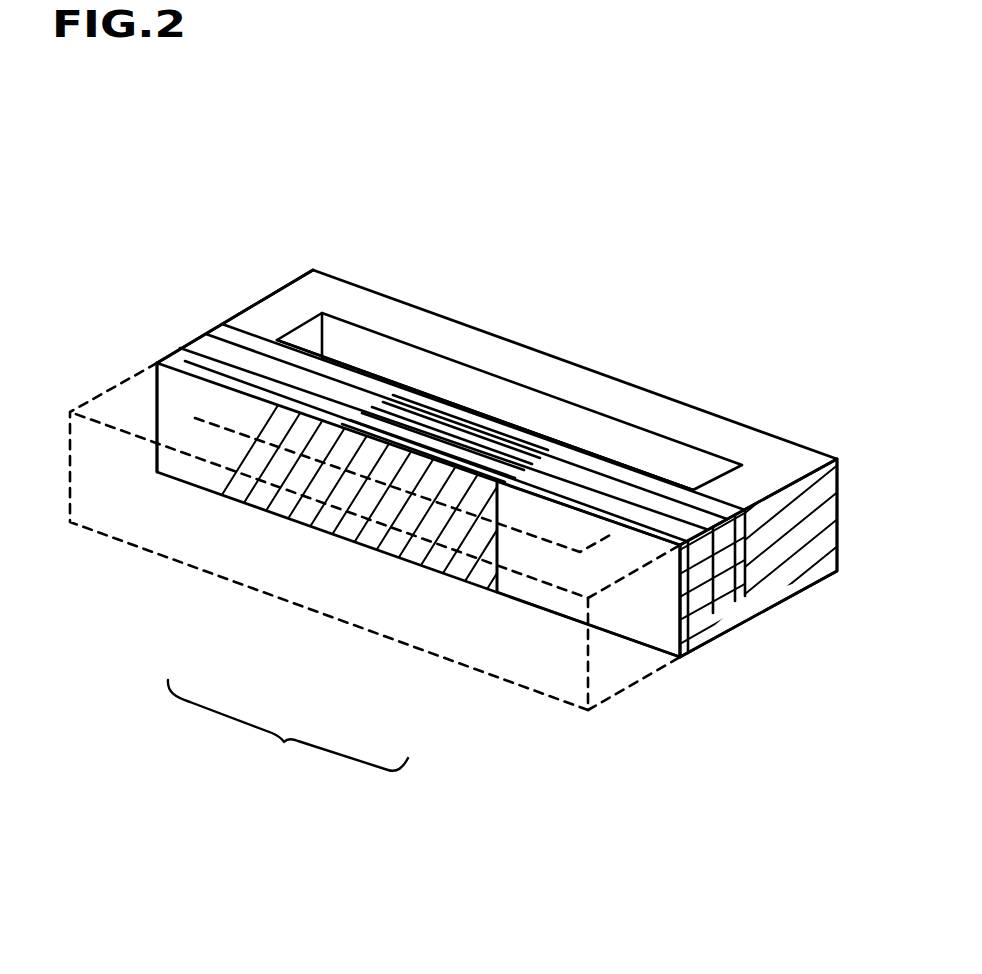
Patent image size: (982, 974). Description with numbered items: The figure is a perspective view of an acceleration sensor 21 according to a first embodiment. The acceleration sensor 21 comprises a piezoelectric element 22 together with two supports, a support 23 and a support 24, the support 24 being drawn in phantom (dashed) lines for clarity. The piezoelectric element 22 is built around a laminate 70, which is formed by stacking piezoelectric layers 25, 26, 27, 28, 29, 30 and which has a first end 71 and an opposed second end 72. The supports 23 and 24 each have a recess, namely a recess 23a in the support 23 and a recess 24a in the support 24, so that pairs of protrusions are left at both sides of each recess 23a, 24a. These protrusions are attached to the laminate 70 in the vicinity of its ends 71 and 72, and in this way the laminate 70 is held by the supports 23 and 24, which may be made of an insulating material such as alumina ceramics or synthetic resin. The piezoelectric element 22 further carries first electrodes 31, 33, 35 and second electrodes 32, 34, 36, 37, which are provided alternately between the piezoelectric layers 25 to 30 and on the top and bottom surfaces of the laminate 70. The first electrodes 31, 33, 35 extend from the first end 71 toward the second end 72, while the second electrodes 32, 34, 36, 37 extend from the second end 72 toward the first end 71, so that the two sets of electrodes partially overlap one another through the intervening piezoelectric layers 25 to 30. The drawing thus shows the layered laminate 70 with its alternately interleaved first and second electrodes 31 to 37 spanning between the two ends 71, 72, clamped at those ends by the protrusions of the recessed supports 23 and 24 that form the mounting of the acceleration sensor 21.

The acceleration sensor 21 is at (591, 177).
The piezoelectric element 22 is at (186, 308).
The support 23 is at (440, 325).
The recess 23a is at (538, 410).
The support 24 is at (502, 653).
The recess 24a is at (560, 537).
The piezoelectric layer 25 is at (375, 412).
The piezoelectric layer 26 is at (432, 398).
The piezoelectric layer 27 is at (460, 398).
The piezoelectric layer 28 is at (343, 424).
The piezoelectric layer 29 is at (492, 398).
The piezoelectric layer 30 is at (403, 402).
The first electrode 31 is at (622, 500).
The second electrode 32 is at (252, 355).
The first electrode 33 is at (626, 492).
The second electrode 34 is at (358, 392).
The first electrode 35 is at (622, 500).
The second electrode 36 is at (343, 408).
The second electrode 37 is at (212, 472).
The laminate 70 is at (288, 730).
The first end 71 is at (722, 655).
The second end 72 is at (160, 346).